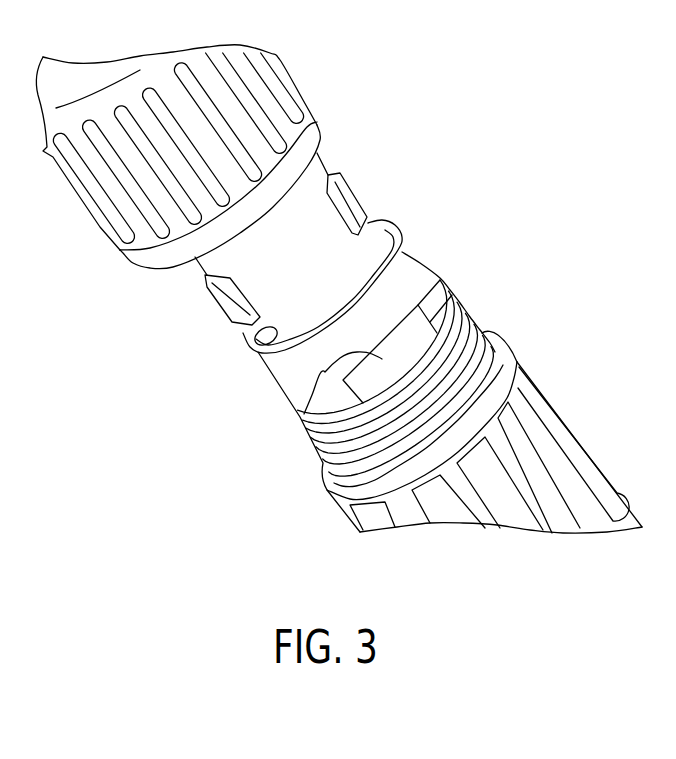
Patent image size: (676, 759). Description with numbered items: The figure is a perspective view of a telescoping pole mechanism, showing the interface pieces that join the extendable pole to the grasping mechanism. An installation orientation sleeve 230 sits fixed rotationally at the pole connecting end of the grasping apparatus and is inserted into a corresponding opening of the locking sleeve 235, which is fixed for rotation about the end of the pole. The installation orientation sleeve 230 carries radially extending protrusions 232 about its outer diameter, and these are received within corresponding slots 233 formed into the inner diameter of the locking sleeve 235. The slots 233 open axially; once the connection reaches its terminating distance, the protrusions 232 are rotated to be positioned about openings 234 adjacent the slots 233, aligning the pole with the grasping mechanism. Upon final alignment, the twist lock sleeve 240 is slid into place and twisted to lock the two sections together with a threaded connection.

The twist lock sleeve 240 is at (283, 97).
The installation orientation sleeve 230 is at (328, 163).
The radially extending protrusions 232 is at (353, 203).
The slots 233 is at (377, 237).
The openings 234 is at (300, 423).
The locking sleeve 235 is at (577, 455).